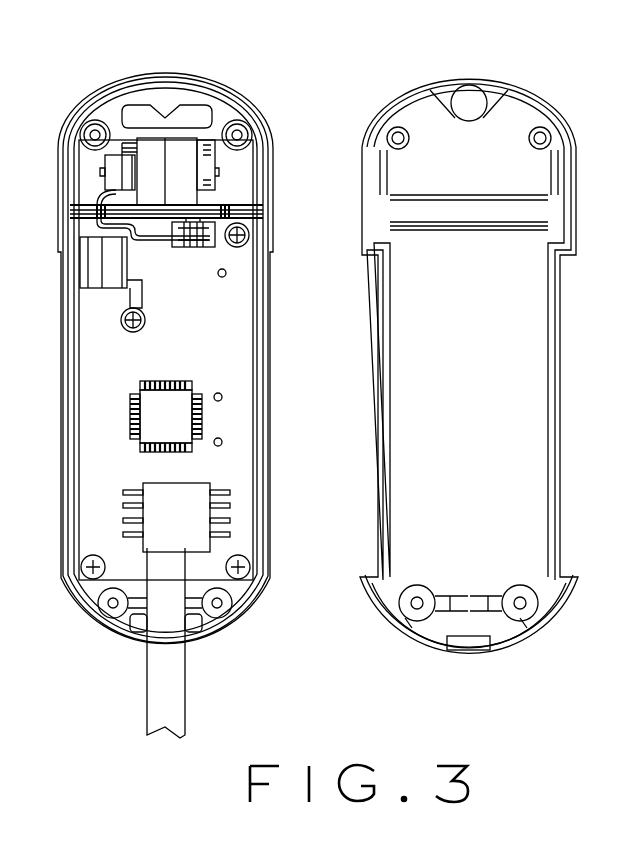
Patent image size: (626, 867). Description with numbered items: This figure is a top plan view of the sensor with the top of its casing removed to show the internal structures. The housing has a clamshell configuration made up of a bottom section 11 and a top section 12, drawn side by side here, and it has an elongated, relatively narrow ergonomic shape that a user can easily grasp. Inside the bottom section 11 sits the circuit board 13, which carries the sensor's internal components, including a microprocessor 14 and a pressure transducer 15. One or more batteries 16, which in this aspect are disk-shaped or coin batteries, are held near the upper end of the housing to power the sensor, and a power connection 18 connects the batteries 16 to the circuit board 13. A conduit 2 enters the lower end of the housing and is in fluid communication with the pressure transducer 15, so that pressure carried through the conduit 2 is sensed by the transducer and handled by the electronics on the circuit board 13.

The conduit 2 is at (188, 694).
The bottom section 11 is at (108, 640).
The top section 12 is at (548, 605).
The circuit board 13 is at (105, 448).
The microprocessor 14 is at (155, 405).
The pressure transducer 15 is at (160, 502).
The batteries 16 is at (178, 160).
The power connection 18 is at (215, 248).